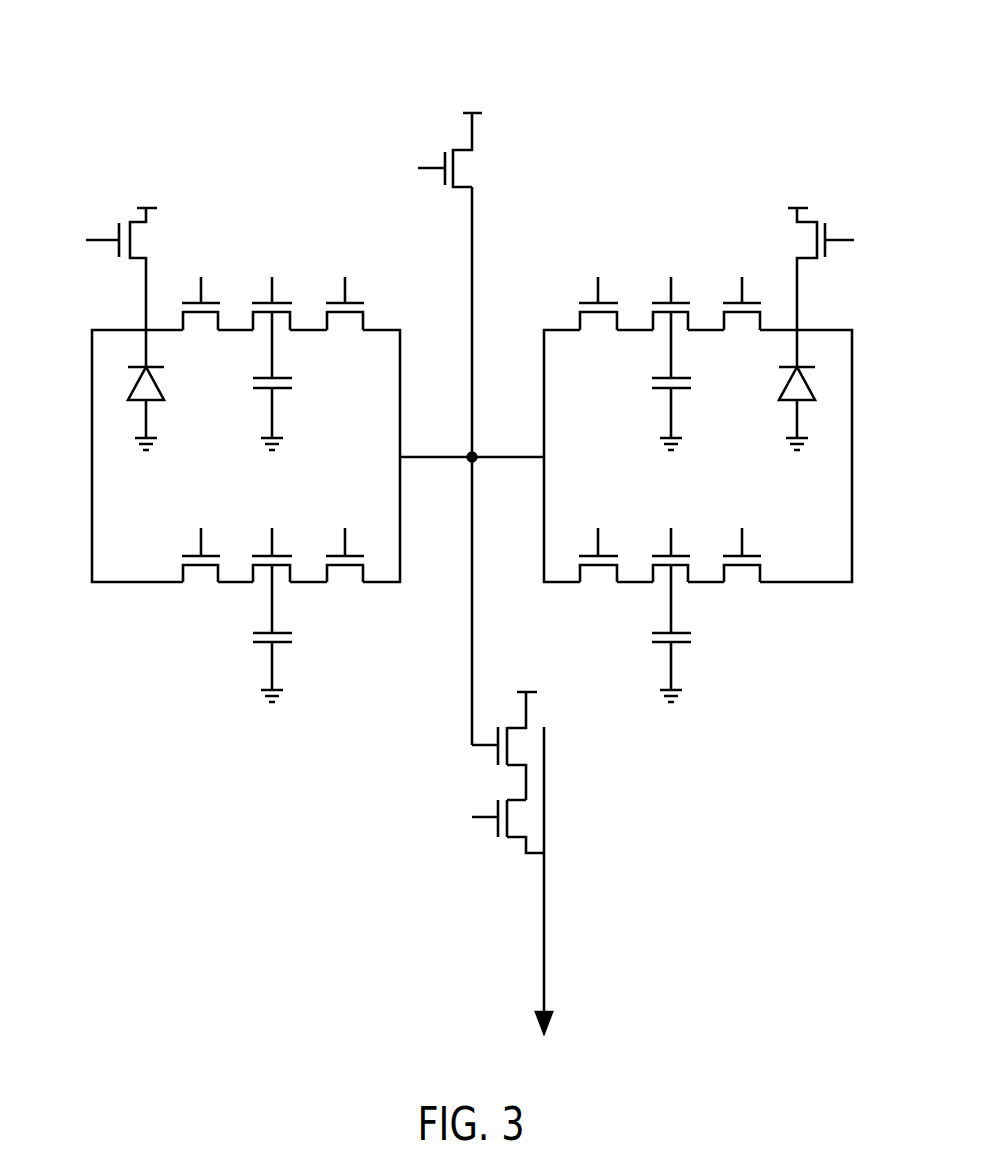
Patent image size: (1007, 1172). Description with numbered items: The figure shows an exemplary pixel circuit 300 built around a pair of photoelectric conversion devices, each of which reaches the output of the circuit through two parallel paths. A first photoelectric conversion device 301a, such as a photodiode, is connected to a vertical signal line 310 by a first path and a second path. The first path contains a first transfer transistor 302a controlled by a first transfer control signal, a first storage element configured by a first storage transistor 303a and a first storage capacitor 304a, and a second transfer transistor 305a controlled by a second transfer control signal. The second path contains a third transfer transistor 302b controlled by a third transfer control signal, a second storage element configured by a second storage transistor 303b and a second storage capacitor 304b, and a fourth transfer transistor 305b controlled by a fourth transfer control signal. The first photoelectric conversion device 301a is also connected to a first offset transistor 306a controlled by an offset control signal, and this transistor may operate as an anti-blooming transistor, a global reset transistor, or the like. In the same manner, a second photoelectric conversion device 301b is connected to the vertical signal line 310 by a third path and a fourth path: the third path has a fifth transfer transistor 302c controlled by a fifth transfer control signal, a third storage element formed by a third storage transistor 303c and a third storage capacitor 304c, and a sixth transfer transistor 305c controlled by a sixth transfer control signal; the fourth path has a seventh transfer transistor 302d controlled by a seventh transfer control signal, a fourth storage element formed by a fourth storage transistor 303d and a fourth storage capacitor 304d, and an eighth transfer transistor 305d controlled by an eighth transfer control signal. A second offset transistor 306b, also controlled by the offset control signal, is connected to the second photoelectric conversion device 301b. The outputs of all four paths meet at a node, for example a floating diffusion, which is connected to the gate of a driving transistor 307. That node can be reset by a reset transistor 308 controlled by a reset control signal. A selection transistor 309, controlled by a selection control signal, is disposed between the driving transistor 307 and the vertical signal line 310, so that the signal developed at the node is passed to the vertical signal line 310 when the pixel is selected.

The pixel circuit 300 is at (68, 76).
The first photoelectric conversion device 301a is at (130, 380).
The second photoelectric conversion device 301b is at (810, 382).
The first transfer transistor 302a is at (222, 320).
The third transfer transistor 302b is at (185, 587).
The fifth transfer transistor 302c is at (725, 587).
The seventh transfer transistor 302d is at (725, 320).
The first storage transistor 303a is at (293, 320).
The second storage transistor 303b is at (257, 587).
The third storage transistor 303c is at (655, 587).
The fourth storage transistor 303d is at (647, 320).
The first storage capacitor 304a is at (280, 390).
The second storage capacitor 304b is at (265, 645).
The third storage capacitor 304c is at (663, 645).
The fourth storage capacitor 304d is at (660, 392).
The second transfer transistor 305a is at (365, 320).
The fourth transfer transistor 305b is at (328, 587).
The sixth transfer transistor 305c is at (580, 587).
The eighth transfer transistor 305d is at (580, 320).
The first offset transistor 306a is at (142, 220).
The second offset transistor 306b is at (807, 220).
The driving transistor 307 is at (520, 767).
The reset transistor 308 is at (467, 143).
The selection transistor 309 is at (520, 838).
The vertical signal line 310 is at (544, 888).